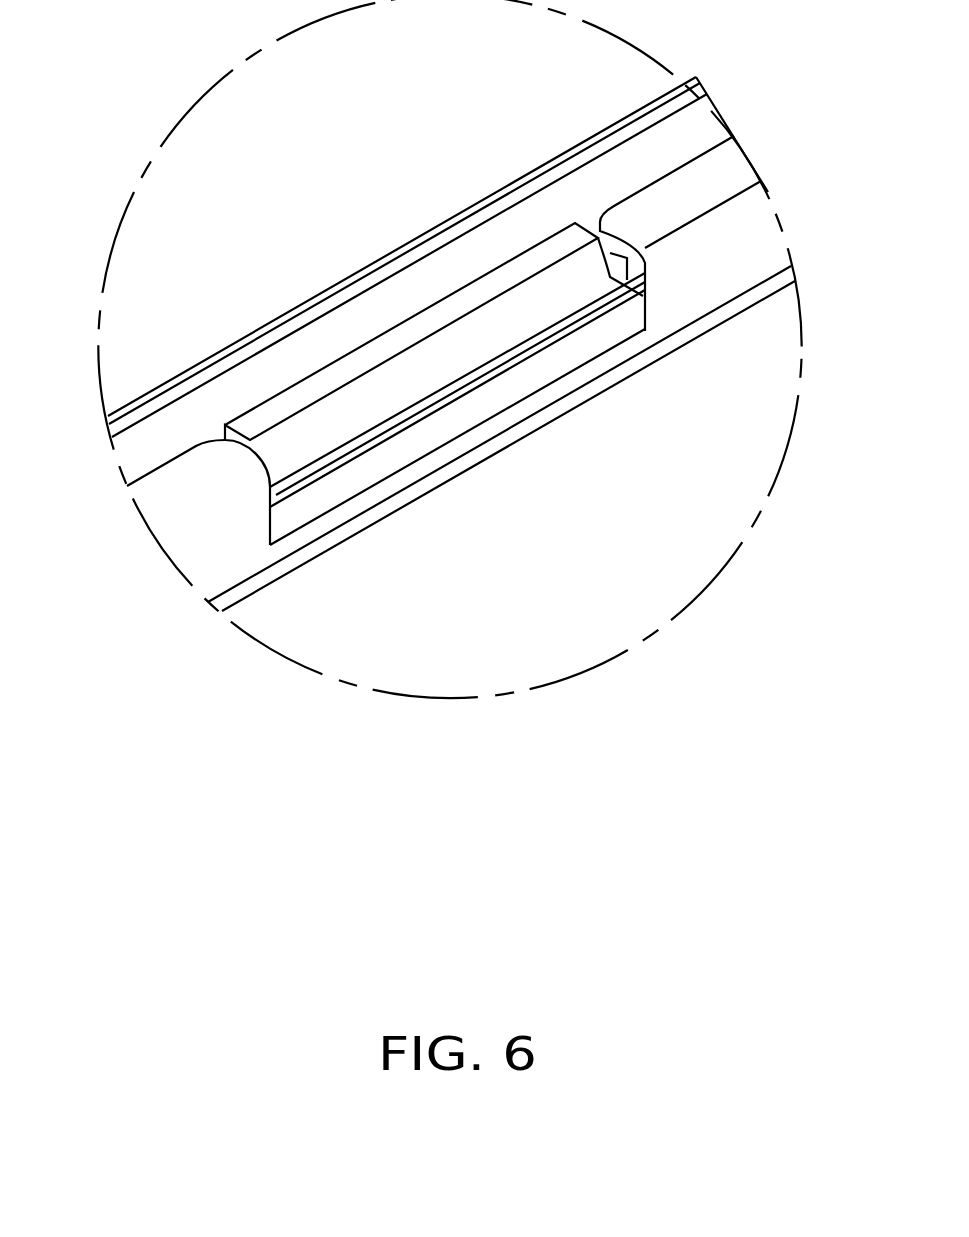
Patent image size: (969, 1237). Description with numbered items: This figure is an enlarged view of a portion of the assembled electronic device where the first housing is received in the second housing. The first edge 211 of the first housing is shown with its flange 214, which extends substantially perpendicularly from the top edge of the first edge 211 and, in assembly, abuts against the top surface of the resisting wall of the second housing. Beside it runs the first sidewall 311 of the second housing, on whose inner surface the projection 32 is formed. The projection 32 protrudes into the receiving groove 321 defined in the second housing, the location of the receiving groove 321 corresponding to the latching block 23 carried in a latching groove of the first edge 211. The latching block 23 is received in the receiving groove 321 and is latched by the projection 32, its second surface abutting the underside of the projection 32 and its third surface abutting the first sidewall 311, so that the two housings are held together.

The first sidewall 311 is at (689, 132).
The flange 214 is at (722, 173).
The first edge 211 is at (758, 238).
The projection 32 is at (303, 433).
The receiving groove 321 is at (280, 497).
The latching block 23 is at (400, 455).